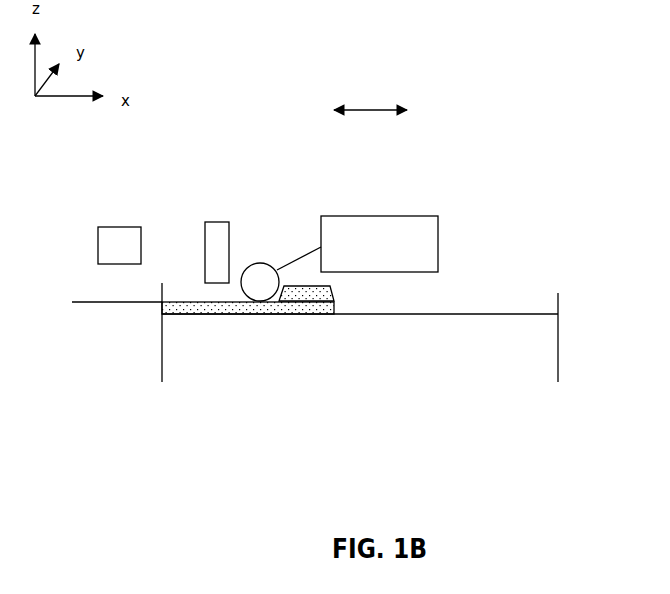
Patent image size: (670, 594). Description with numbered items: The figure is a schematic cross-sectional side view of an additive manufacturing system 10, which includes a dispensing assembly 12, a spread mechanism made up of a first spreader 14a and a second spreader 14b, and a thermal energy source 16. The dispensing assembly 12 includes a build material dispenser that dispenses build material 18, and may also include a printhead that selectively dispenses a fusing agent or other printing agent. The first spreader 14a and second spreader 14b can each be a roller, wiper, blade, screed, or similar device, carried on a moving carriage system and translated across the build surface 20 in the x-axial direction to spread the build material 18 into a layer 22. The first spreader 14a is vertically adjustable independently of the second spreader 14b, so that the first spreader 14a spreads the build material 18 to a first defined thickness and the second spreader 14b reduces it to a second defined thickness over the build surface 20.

The additive manufacturing system 10 is at (554, 126).
The dispensing assembly 12 is at (131, 240).
The first spreader 14a is at (260, 263).
The second spreader 14b is at (217, 221).
The thermal energy source 16 is at (420, 255).
The build material 18 is at (331, 290).
The build surface 20 is at (490, 313).
The layer 22 is at (197, 309).